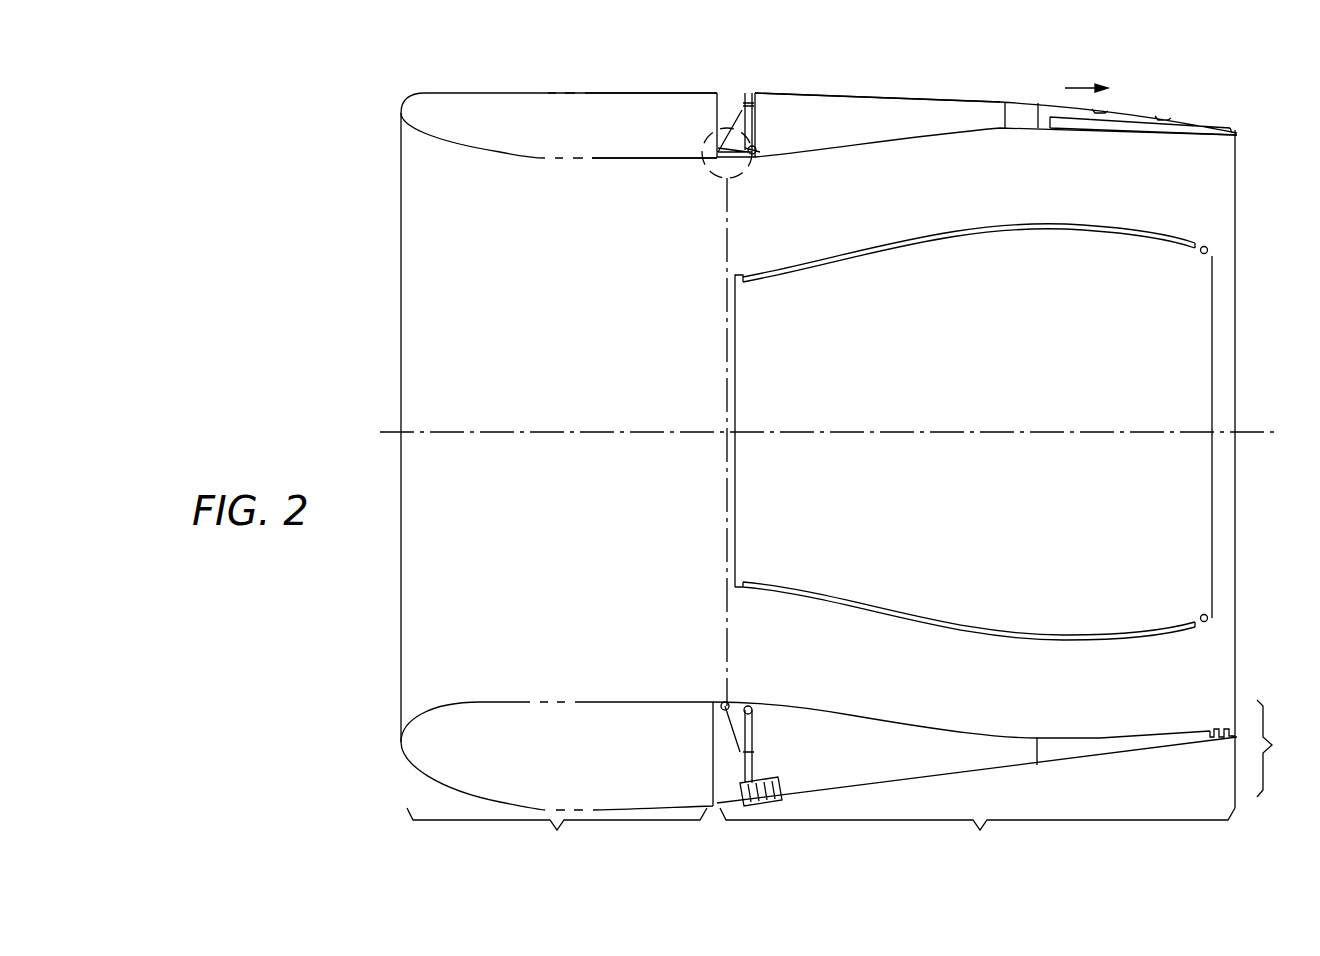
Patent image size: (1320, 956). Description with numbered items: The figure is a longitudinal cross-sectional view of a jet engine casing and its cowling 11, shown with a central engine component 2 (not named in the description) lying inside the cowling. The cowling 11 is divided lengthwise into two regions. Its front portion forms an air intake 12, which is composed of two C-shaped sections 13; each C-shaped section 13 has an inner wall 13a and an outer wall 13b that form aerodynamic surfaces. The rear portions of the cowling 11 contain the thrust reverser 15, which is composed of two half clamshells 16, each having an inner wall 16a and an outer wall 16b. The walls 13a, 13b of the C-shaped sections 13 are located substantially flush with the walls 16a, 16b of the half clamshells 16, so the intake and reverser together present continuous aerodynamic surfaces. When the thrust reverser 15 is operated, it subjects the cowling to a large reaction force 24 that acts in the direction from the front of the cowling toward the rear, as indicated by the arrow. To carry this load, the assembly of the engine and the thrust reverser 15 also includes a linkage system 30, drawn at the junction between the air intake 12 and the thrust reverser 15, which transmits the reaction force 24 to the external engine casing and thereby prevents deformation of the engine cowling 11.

The frame / engine structure 2 is at (929, 440).
The cowling 11 is at (1282, 748).
The air intake 12 is at (557, 781).
The C-shaped section 13 is at (497, 108).
The inner wall 13a is at (641, 92).
The outer wall 13b is at (583, 158).
The thrust reverser 15 is at (975, 780).
The half clamshell 16 is at (945, 118).
The inner wall 16a is at (819, 93).
The outer wall 16b is at (862, 147).
The reaction force 24 is at (1086, 74).
The linkage system 30 is at (741, 191).